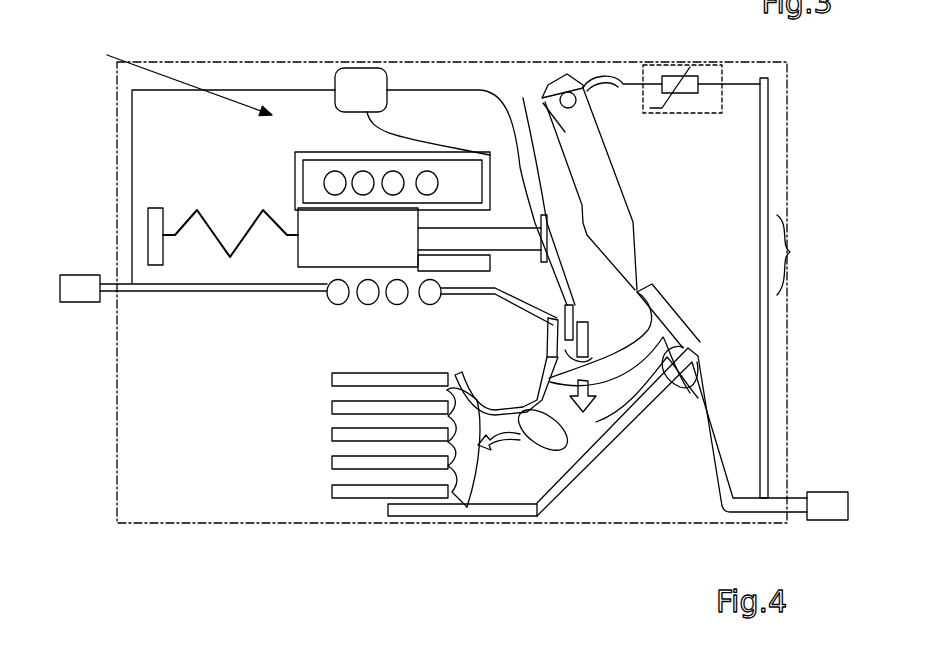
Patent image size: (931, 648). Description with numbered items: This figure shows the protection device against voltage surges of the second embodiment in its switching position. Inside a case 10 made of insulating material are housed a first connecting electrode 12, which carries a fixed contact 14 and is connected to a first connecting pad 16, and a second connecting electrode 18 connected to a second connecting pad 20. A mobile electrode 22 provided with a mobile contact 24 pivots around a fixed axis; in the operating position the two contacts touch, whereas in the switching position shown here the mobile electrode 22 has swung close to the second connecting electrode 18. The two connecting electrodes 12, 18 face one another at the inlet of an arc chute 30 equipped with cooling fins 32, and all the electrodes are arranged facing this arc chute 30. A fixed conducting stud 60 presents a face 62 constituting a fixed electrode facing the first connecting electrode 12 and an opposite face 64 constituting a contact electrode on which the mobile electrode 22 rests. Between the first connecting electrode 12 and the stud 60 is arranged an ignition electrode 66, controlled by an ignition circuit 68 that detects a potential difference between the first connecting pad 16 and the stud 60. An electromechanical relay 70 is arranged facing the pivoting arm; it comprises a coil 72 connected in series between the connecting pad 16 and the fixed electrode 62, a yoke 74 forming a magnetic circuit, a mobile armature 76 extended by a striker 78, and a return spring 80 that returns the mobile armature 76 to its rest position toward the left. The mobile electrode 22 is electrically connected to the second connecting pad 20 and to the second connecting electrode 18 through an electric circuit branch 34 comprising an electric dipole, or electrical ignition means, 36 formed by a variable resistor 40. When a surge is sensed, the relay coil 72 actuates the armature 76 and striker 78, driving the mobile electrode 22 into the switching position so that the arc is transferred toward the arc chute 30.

The case 10 is at (117, 393).
The first connecting electrode 12 is at (480, 398).
The fixed contact 14 is at (548, 345).
The first connecting pad 16 is at (88, 282).
The second connecting electrode 18 is at (415, 512).
The second connecting pad 20 is at (830, 502).
The mobile electrode 22 is at (523, 98).
The mobile contact 24 is at (700, 388).
The arc chute 30 is at (300, 468).
The cooling fins 32 is at (340, 410).
The electric circuit branch 34 is at (767, 410).
The electric dipole 36 is at (723, 82).
The variable resistor 40 is at (672, 82).
The fixed conducting stud 60 is at (816, 255).
The face constituting a fixed electrode 62 is at (588, 335).
The face constituting a contact electrode 64 is at (640, 285).
The ignition electrode 66 is at (575, 305).
The ignition circuit 68 is at (340, 82).
The electromechanical relay 70 is at (157, 72).
The coil 72 is at (337, 297).
The yoke 74 is at (303, 210).
The mobile armature 76 is at (312, 235).
The striker 78 is at (475, 237).
The return spring 80 is at (181, 222).